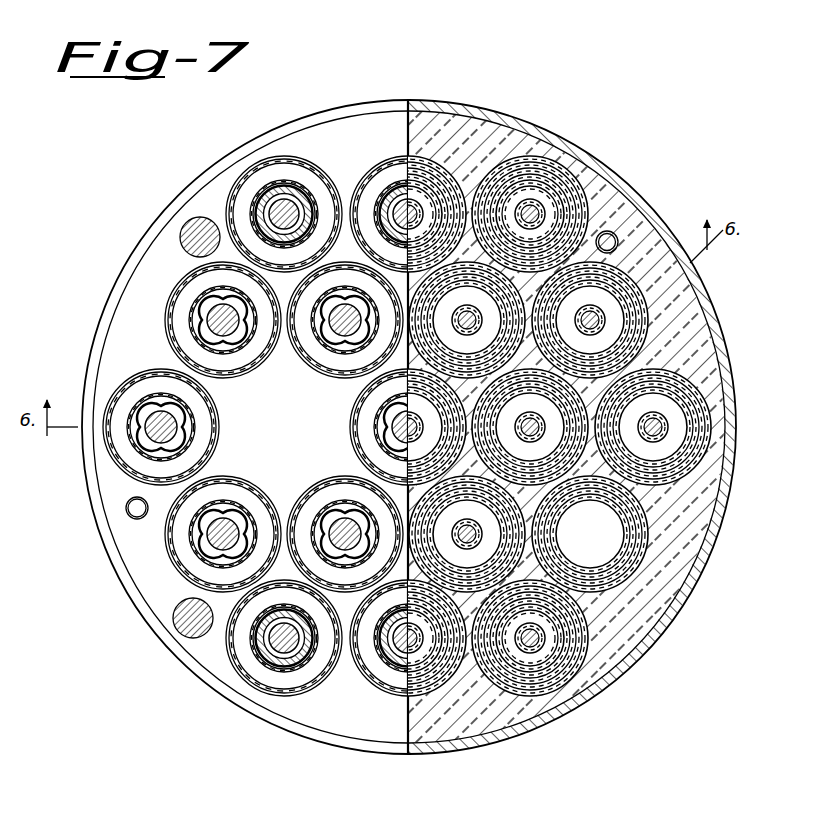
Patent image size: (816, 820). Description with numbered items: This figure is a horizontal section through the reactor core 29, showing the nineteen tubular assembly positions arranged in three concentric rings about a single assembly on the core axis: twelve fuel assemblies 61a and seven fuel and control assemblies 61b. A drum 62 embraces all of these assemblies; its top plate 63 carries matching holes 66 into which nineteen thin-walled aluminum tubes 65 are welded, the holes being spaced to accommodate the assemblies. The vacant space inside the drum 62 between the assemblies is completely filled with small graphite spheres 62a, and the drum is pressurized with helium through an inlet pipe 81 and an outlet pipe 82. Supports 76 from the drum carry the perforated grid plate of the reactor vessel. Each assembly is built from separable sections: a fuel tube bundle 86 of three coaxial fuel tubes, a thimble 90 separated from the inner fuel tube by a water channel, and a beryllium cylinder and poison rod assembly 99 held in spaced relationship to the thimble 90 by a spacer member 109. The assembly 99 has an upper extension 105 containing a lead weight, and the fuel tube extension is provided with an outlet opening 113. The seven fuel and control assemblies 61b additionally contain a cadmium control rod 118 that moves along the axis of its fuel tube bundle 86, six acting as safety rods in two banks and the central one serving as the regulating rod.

The reactor core 29 is at (604, 130).
The fuel assemblies 61a is at (136, 383).
The fuel and control assemblies 61b is at (384, 183).
The drum 62 is at (700, 313).
The graphite spheres 62a is at (722, 381).
The top plate 63 is at (361, 718).
The aluminum tubes 65 is at (487, 175).
The holes 66 is at (257, 699).
The supports 76 is at (190, 235).
The inlet pipe 81 is at (126, 513).
The outlet pipe 82 is at (620, 237).
The fuel tube bundle 86 is at (612, 577).
The thimble 90 is at (266, 202).
The beryllium cylinder and poison rod assembly 99 is at (606, 339).
The upper extension 105 is at (268, 203).
The spacer member 109 is at (203, 305).
The outlet opening 113 is at (334, 173).
The control rod 118 is at (264, 656).